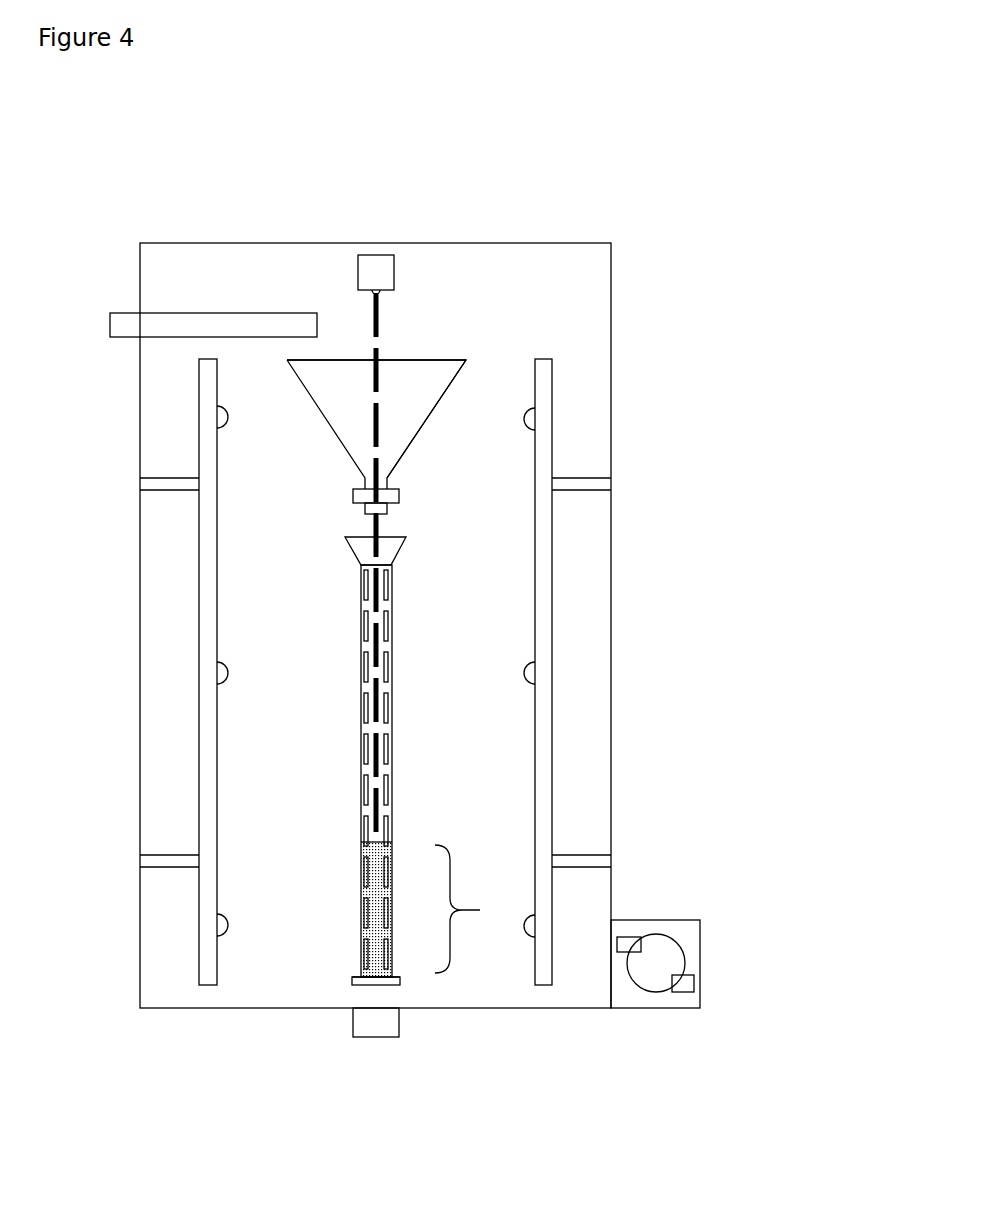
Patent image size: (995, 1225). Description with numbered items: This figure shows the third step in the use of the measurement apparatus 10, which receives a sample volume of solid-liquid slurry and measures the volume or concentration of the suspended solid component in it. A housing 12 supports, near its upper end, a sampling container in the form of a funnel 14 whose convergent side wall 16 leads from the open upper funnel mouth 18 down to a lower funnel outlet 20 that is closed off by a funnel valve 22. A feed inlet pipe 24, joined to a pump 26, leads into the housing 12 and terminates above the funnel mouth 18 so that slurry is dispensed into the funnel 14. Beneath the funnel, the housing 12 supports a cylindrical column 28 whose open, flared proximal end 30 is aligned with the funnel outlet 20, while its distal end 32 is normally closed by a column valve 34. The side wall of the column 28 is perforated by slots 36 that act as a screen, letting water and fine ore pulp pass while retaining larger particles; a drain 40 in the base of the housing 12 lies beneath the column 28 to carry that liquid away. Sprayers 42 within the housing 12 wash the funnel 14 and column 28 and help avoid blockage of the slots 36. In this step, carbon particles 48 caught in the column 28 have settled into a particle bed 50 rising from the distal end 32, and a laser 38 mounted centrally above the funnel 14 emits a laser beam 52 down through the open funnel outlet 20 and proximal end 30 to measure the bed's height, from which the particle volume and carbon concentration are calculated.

The measurement apparatus 10 is at (692, 158).
The housing 12 is at (611, 317).
The funnel 14 is at (435, 437).
The convergent side wall 16 is at (447, 373).
The funnel mouth 18 is at (422, 347).
The funnel outlet 20 is at (385, 510).
The funnel valve 22 is at (399, 496).
The feed inlet pipe 24 is at (190, 327).
The pump 26 is at (694, 952).
The cylindrical column 28 is at (392, 750).
The proximal end 30 is at (417, 567).
The distal end 32 is at (408, 972).
The column valve 34 is at (355, 982).
The slots 36 is at (363, 830).
The laser 38 is at (363, 262).
The drain 40 is at (382, 1028).
The sprayers 42 is at (218, 673).
The carbon particles 48 is at (370, 952).
The particle bed 50 is at (480, 910).
The laser beam 52 is at (311, 672).